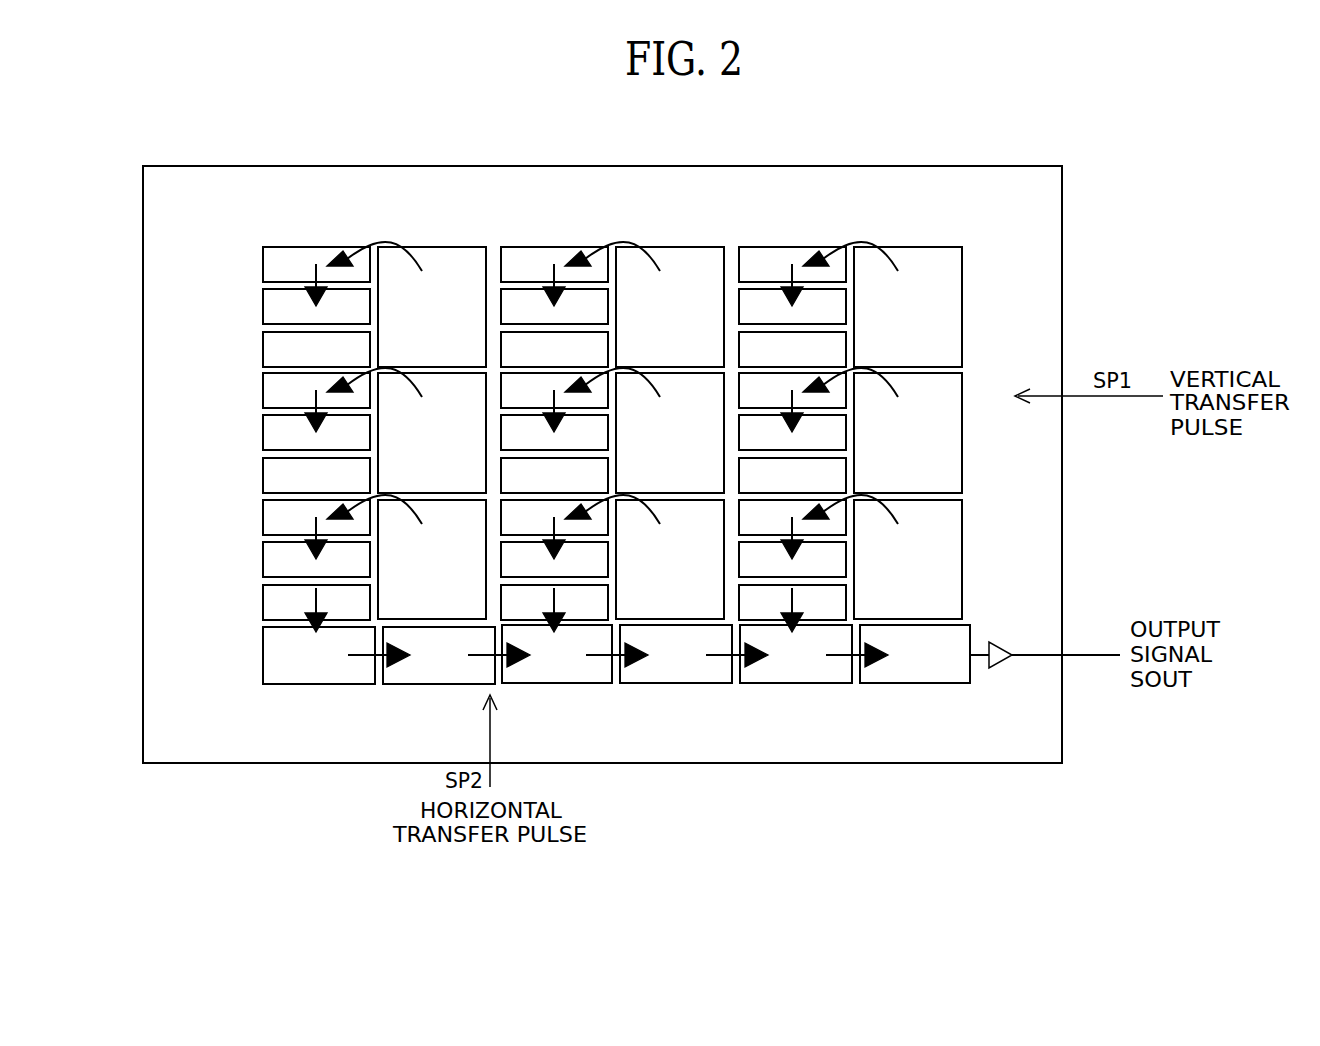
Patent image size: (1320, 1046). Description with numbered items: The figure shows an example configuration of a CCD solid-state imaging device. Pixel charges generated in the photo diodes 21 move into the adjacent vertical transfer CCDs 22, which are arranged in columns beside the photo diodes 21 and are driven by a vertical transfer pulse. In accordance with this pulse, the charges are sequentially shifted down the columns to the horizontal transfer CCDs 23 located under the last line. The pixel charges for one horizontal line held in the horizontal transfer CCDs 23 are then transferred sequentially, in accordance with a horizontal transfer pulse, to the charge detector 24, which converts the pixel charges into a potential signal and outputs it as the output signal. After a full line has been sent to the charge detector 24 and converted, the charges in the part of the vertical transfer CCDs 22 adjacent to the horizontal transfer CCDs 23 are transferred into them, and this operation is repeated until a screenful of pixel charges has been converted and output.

The photo diode 21 is at (926, 263).
The vertical transfer CCD 22 is at (829, 246).
The horizontal transfer CCD 23 is at (348, 675).
The charge detector 24 is at (993, 667).